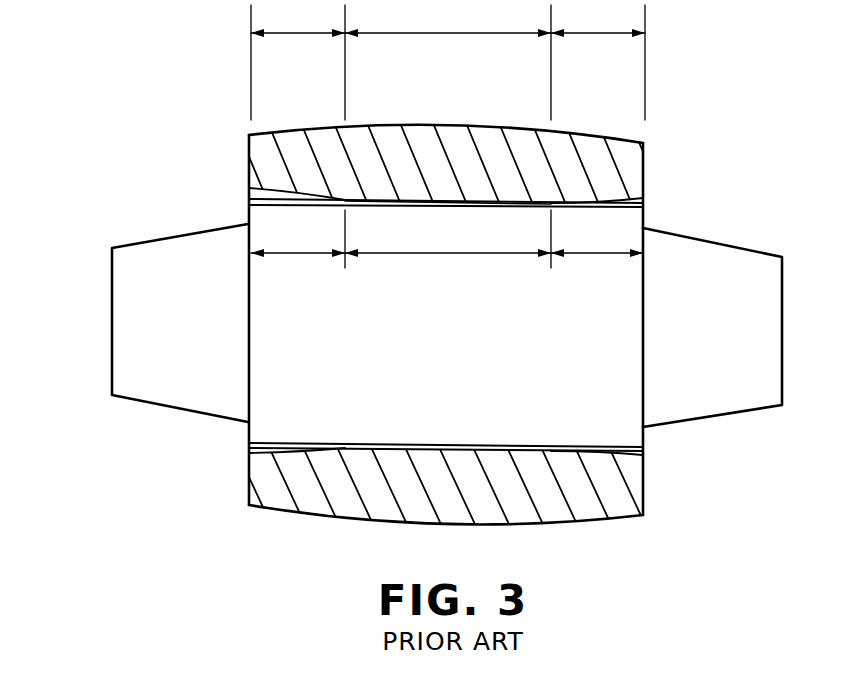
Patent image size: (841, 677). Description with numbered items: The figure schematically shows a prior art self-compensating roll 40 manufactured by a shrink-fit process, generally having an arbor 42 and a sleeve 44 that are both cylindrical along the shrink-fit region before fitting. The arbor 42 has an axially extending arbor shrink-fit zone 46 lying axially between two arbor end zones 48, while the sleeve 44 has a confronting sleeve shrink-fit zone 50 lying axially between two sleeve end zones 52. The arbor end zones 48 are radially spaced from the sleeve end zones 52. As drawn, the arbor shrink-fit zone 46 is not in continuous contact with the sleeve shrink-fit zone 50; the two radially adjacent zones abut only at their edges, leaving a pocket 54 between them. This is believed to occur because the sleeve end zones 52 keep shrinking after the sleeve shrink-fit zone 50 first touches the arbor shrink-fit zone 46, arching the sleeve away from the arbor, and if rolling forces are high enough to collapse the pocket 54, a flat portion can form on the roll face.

The self-compensating roll 40 is at (129, 241).
The arbor 42 is at (248, 211).
The sleeve 44 is at (305, 134).
The arbor shrink-fit zone 46 is at (444, 252).
The arbor end zones 48 is at (600, 252).
The sleeve shrink-fit zone 50 is at (448, 60).
The sleeve end zones 52 is at (448, 60).
The pocket 54 is at (441, 198).